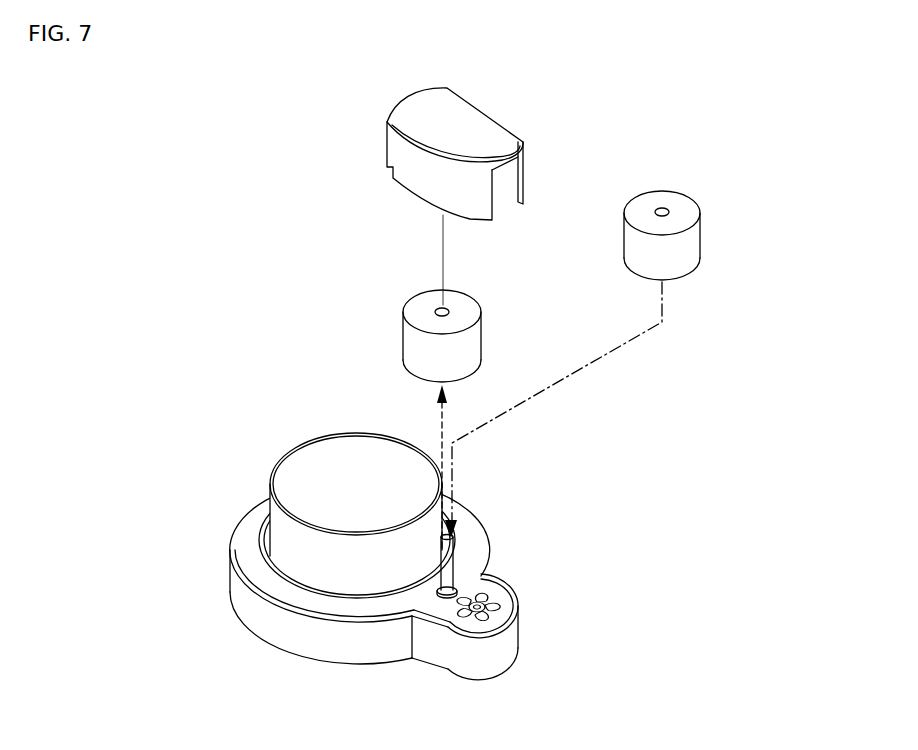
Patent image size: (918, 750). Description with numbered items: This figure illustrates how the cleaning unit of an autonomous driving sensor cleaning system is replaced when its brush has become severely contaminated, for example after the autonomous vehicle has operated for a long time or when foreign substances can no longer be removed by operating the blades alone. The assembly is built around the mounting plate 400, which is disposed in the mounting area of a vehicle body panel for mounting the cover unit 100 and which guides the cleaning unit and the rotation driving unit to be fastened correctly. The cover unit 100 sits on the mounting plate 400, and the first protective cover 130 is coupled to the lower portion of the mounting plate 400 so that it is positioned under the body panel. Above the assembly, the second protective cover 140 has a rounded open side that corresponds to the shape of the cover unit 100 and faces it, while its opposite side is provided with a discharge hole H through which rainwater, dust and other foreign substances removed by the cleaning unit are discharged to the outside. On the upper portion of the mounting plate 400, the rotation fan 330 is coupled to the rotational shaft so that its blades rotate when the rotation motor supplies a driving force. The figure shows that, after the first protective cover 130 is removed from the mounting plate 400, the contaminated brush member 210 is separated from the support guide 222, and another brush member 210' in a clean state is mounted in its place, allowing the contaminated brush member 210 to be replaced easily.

The cover unit 100 is at (302, 462).
The second protective cover 140 is at (396, 149).
The discharge hole H is at (493, 172).
The brush member 210 is at (400, 336).
The brush member in a clean state 210' is at (710, 235).
The support guide 222 is at (445, 562).
The rotation fan 330 is at (507, 606).
The mounting plate 400 is at (243, 543).
The first protective cover 130 is at (292, 630).